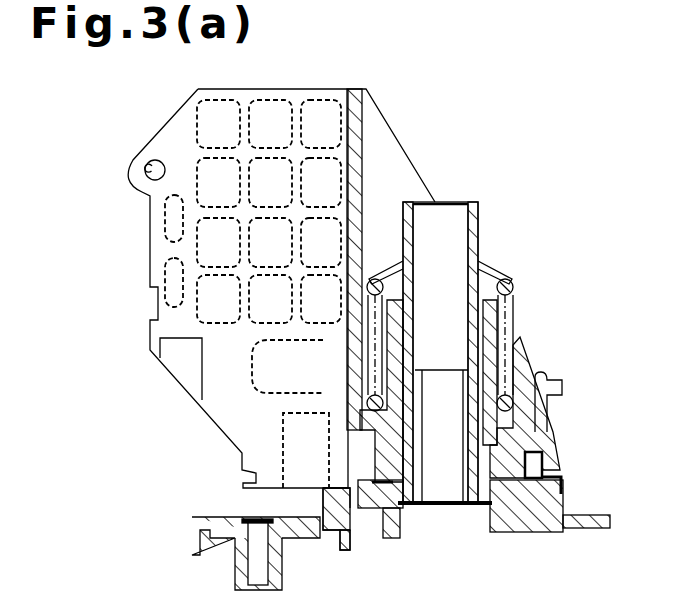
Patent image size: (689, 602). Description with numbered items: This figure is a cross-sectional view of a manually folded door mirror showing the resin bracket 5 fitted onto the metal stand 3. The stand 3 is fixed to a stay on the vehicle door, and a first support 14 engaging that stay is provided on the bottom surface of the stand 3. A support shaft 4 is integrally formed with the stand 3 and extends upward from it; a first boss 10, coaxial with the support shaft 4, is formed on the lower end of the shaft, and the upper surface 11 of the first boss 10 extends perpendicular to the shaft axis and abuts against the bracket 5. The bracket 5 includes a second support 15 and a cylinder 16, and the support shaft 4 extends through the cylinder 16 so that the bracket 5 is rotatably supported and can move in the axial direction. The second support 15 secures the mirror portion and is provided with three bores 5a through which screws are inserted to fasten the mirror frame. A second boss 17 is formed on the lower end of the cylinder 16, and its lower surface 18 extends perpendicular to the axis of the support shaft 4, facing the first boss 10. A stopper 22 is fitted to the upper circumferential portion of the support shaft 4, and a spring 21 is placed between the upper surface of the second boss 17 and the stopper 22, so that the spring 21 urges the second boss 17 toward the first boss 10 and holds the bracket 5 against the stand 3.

The stand 3 is at (523, 543).
The support shaft 4 is at (480, 217).
The bracket 5 is at (262, 89).
The bores 5a is at (141, 181).
The first boss 10 is at (500, 505).
The upper surface of the first boss 11 is at (368, 473).
The first support 14 is at (236, 577).
The second support 15 is at (172, 142).
The cylinder 16 is at (496, 338).
The second boss 17 is at (507, 433).
The lower surface of the second boss 18 is at (545, 478).
The spring 21 is at (513, 301).
The stopper 22 is at (492, 272).